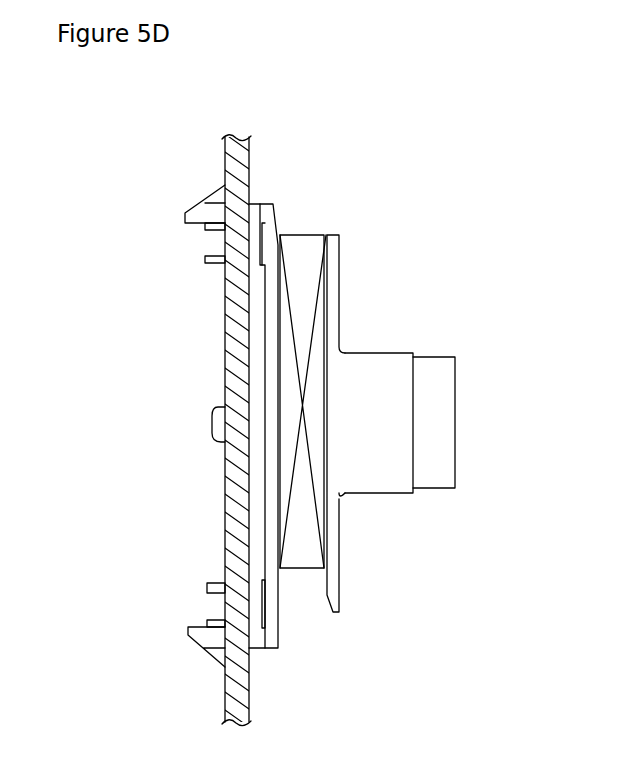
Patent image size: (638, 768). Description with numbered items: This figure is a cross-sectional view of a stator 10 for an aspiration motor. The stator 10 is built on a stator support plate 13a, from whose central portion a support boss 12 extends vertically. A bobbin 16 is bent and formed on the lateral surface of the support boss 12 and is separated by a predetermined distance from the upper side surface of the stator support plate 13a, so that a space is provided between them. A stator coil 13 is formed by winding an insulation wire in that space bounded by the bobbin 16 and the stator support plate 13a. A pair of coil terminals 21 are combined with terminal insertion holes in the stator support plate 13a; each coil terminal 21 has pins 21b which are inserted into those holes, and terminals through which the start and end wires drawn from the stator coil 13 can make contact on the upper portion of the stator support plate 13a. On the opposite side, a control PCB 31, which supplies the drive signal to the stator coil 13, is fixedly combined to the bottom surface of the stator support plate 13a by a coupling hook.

The stator 10 is at (352, 184).
The support boss 12 is at (380, 482).
The stator coil 13 is at (303, 558).
The stator support plate 13a is at (258, 535).
The bobbin 16 is at (332, 280).
The coil terminal 21 is at (265, 233).
The pin 21b is at (205, 259).
The control PCB 31 is at (225, 179).